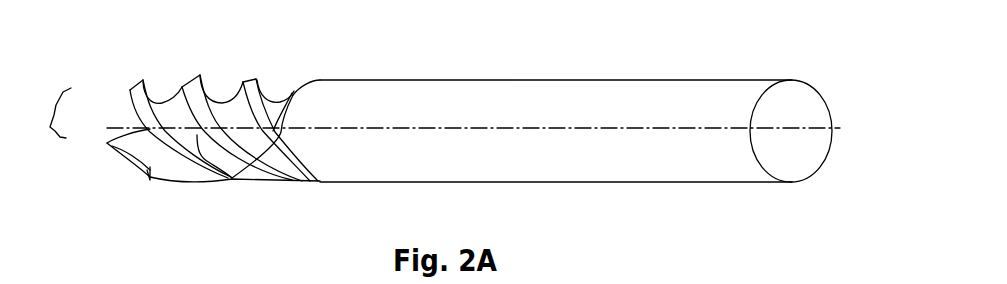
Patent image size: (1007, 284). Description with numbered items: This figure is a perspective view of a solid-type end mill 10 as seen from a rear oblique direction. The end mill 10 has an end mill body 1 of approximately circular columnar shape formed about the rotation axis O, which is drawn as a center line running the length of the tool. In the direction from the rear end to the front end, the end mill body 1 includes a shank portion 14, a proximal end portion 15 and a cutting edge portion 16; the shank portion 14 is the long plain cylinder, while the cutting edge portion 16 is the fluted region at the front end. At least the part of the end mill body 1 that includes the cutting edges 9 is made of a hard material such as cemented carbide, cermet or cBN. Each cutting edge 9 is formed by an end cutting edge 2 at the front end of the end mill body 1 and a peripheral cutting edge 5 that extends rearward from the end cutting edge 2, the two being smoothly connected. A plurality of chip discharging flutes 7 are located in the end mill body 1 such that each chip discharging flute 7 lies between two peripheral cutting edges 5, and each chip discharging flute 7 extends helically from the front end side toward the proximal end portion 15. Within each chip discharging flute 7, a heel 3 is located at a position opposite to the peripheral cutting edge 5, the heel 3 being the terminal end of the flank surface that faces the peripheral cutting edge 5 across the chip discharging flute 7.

The end mill body 1 is at (632, 58).
The end cutting edge 2 is at (117, 129).
The heel 3 is at (130, 90).
The peripheral cutting edge 5 is at (112, 147).
The chip discharging flute 7 is at (233, 115).
The cutting edge 9 is at (52, 109).
The end mill 10 is at (492, 78).
The shank portion 14 is at (583, 185).
The proximal end portion 15 is at (292, 183).
The cutting edge portion 16 is at (198, 184).
The rotation axis O is at (481, 116).